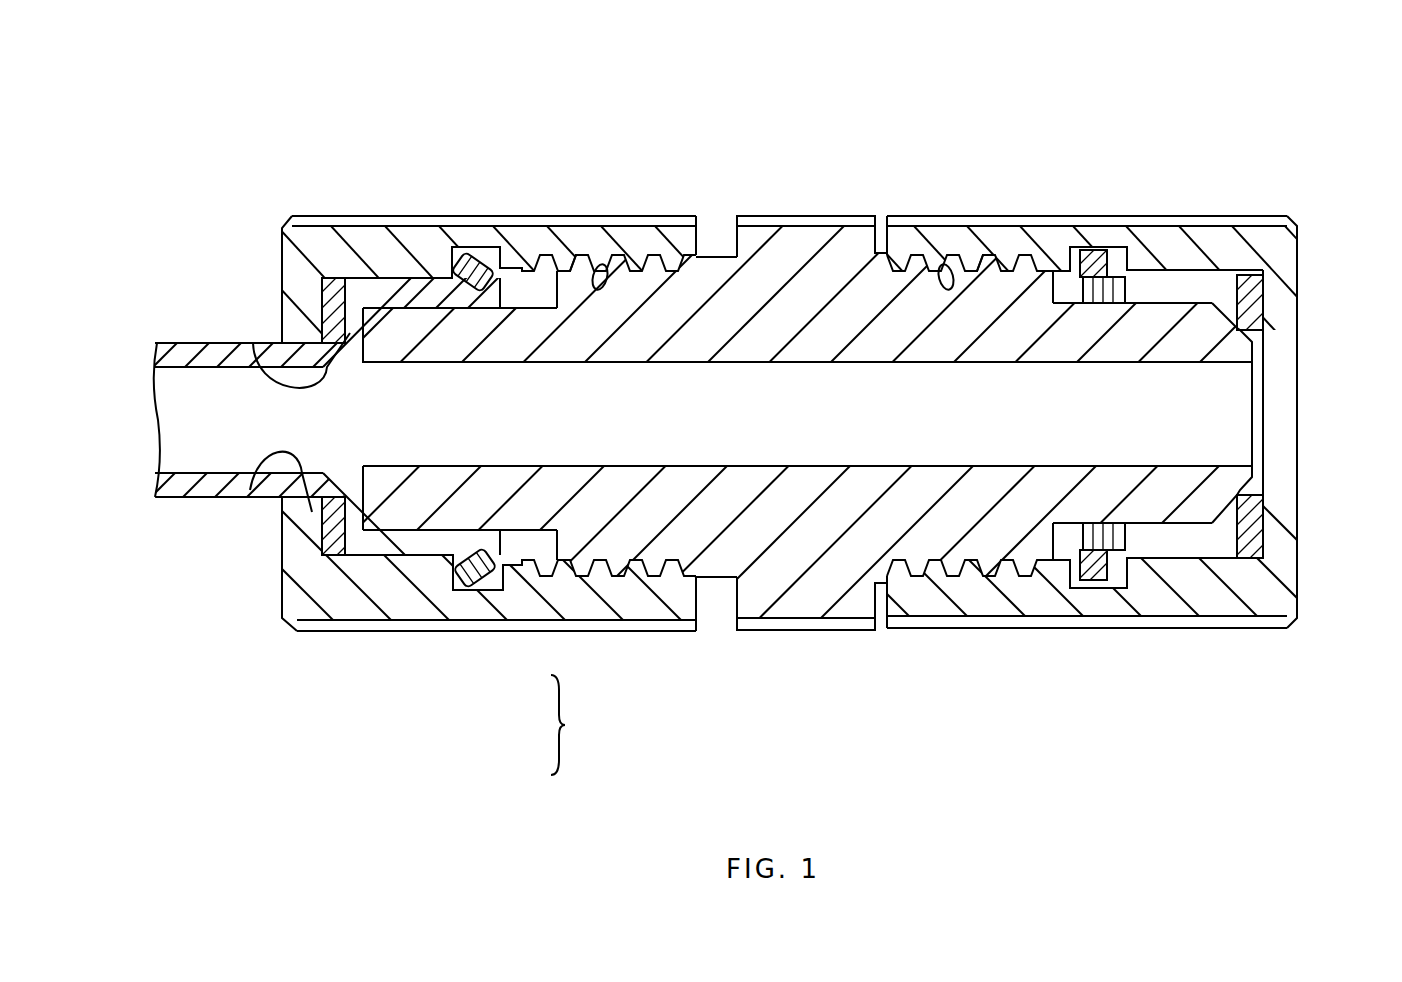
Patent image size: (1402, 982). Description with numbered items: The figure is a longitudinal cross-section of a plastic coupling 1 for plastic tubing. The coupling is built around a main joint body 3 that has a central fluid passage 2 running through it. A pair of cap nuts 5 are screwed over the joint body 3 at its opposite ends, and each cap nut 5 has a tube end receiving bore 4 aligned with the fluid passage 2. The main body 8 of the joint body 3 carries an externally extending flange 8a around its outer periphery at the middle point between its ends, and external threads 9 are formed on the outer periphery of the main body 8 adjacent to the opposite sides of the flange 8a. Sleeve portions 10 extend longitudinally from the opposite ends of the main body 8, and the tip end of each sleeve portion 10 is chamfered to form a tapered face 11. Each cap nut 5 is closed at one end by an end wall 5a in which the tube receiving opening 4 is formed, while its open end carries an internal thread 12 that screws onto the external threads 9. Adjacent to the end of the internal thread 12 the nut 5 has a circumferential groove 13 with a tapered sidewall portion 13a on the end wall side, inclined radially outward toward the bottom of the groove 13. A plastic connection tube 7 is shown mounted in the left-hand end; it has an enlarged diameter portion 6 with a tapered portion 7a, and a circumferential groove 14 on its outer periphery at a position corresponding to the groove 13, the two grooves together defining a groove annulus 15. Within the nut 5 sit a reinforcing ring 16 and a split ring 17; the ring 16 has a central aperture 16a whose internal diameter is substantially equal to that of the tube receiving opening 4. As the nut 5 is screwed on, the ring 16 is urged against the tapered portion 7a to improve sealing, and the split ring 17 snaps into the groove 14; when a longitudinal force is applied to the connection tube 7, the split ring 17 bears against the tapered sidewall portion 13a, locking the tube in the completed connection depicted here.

The plastic coupling 1 is at (348, 140).
The central fluid passage 2 is at (810, 390).
The main joint body 3 is at (813, 610).
The tube end receiving bore 4 is at (250, 490).
The cap nut 5 is at (390, 250).
The end wall 5a is at (303, 513).
The enlarged diameter portion 6 is at (413, 288).
The plastic connection tube 7 is at (188, 357).
The tapered portion 7a is at (390, 318).
The main body 8 is at (975, 520).
The flange 8a is at (768, 585).
The external threads 9 is at (660, 262).
The sleeve portion 10 is at (450, 510).
The tapered face 11 is at (382, 495).
The internal thread 12 is at (597, 265).
The circumferential groove 13 is at (493, 585).
The tapered sidewall portion 13a is at (475, 262).
The circumferential groove 14 is at (480, 585).
The groove annulus 15 is at (577, 755).
The reinforcing ring 16 is at (322, 535).
The ring 16a is at (253, 343).
The split ring 17 is at (468, 585).